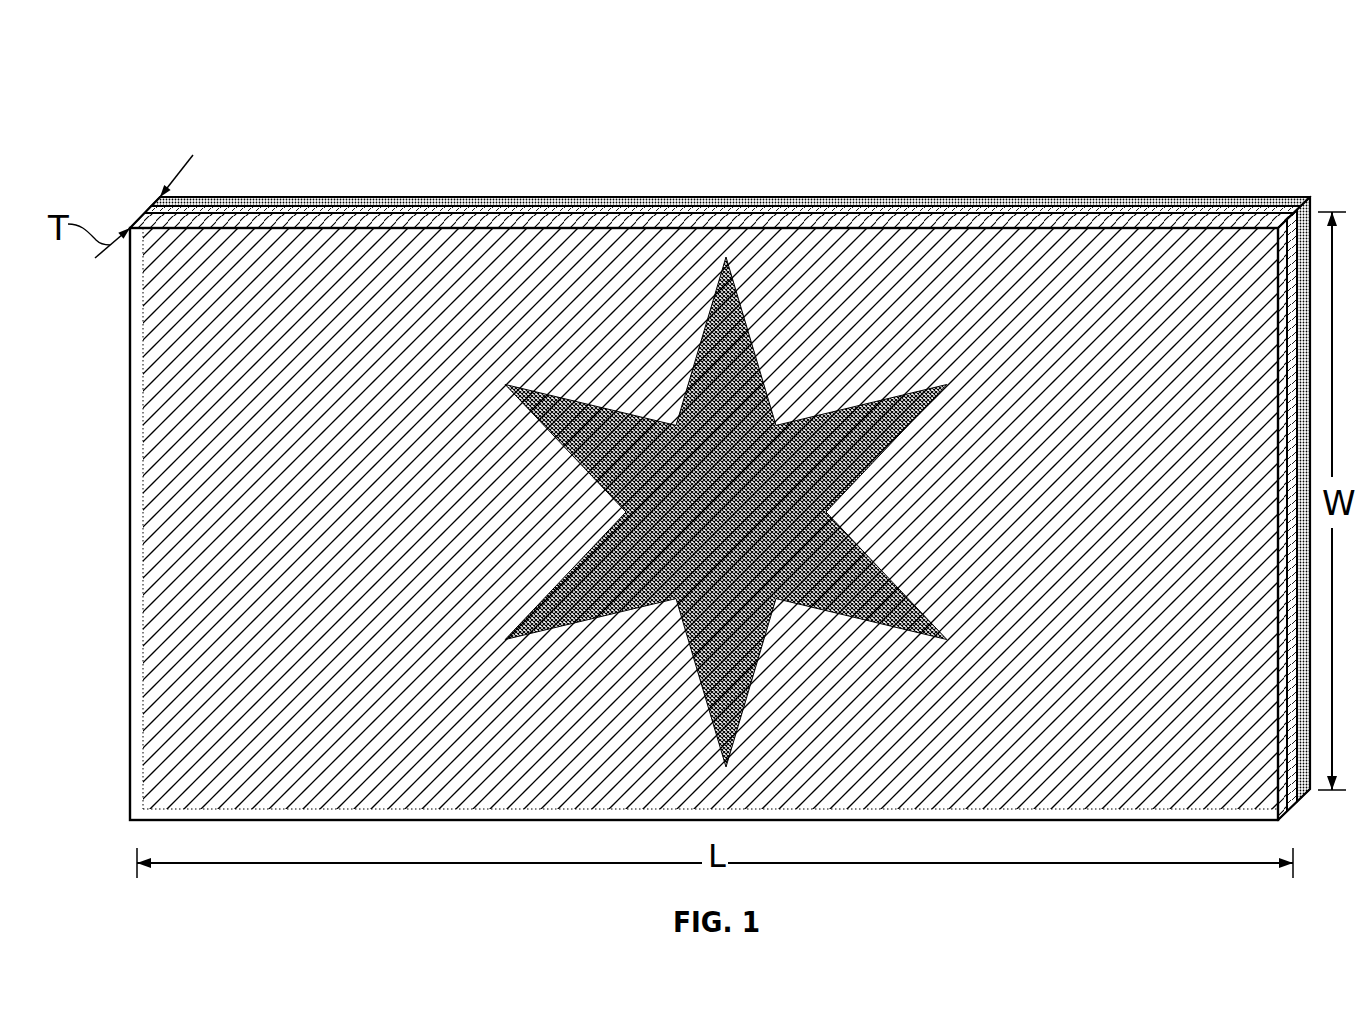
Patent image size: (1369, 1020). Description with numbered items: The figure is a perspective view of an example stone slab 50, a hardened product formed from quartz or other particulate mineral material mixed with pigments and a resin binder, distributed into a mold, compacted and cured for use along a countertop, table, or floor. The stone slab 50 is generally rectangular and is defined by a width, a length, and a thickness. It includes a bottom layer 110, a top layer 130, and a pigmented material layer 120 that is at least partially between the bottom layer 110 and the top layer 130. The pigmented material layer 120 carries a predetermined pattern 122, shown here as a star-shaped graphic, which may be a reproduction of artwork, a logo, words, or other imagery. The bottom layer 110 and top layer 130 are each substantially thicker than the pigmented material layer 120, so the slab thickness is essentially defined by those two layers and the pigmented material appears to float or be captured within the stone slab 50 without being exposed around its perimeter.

The stone slab 50 is at (720, 442).
The bottom layer 110 is at (1108, 200).
The pigmented material layer 120 is at (995, 217).
The top layer 130 is at (712, 470).
The predetermined pattern 122 is at (713, 303).